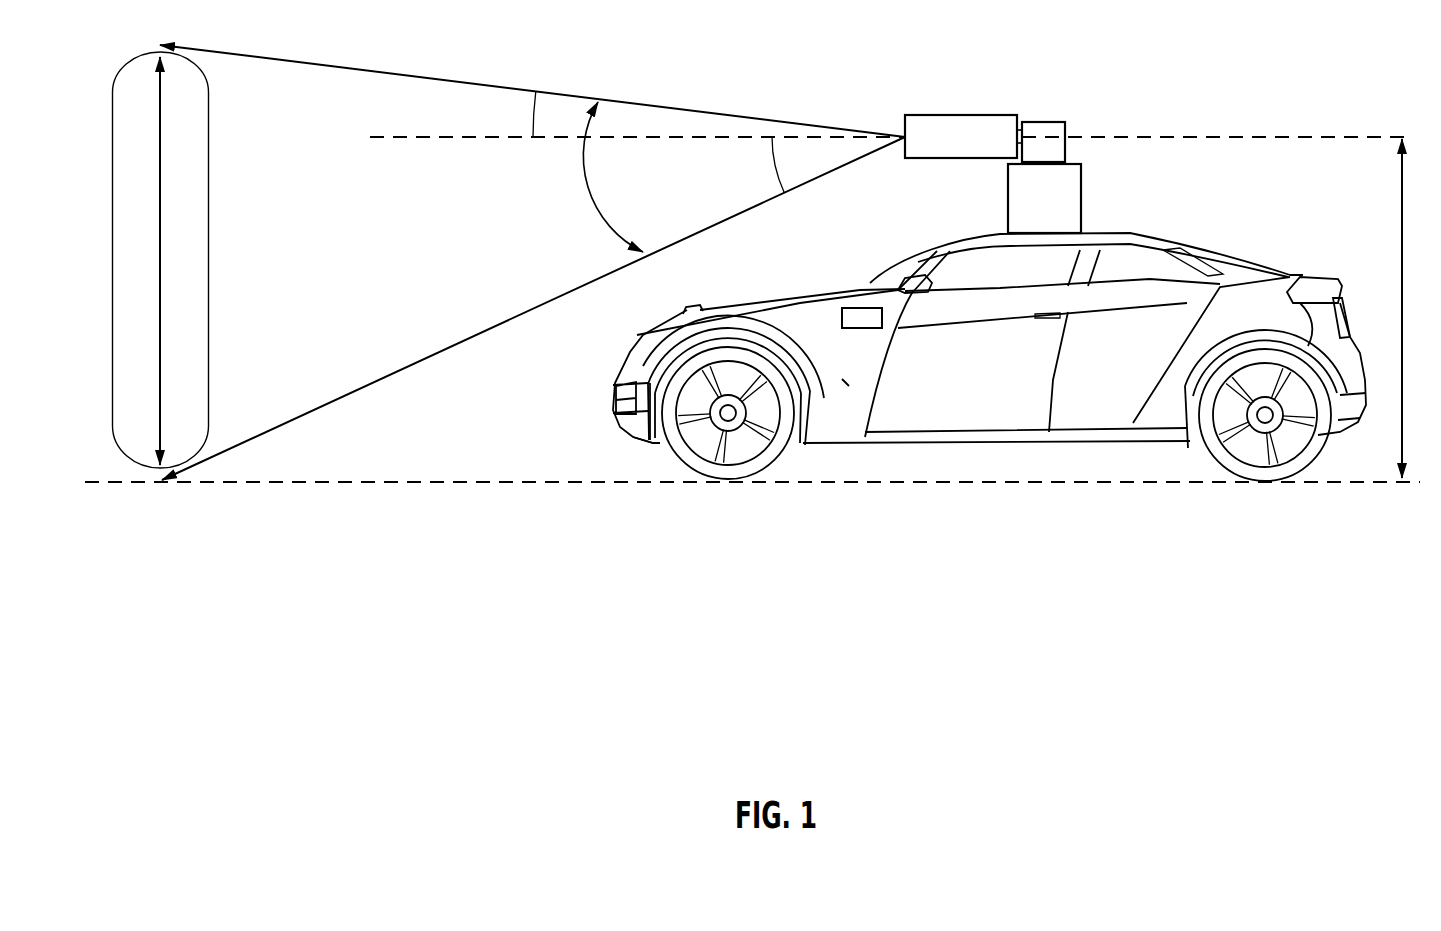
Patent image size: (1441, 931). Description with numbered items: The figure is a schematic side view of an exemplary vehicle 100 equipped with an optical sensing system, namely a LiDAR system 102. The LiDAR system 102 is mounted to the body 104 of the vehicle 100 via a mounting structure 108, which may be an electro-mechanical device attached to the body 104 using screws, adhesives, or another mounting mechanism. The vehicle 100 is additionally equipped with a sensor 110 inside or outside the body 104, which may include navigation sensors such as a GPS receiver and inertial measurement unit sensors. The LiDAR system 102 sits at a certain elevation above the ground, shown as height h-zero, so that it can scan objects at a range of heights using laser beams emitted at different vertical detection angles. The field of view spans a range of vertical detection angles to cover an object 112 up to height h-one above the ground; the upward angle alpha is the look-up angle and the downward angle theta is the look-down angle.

The vehicle 100 is at (759, 382).
The LiDAR system 102 is at (960, 104).
The body 104 is at (1288, 262).
The mounting structure 108 is at (1086, 214).
The sensor 110 is at (851, 305).
The object 112 is at (221, 228).